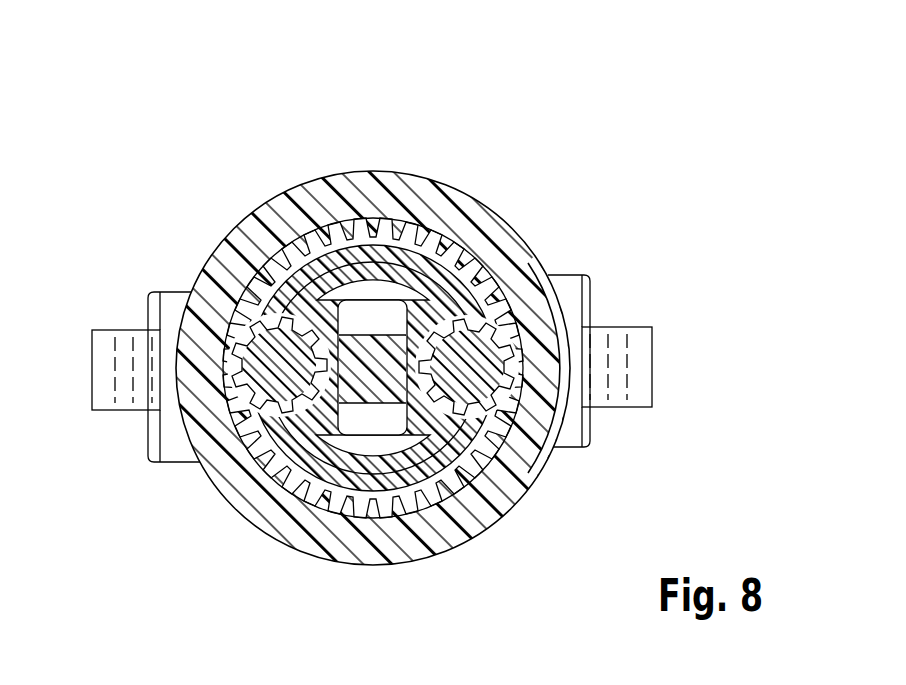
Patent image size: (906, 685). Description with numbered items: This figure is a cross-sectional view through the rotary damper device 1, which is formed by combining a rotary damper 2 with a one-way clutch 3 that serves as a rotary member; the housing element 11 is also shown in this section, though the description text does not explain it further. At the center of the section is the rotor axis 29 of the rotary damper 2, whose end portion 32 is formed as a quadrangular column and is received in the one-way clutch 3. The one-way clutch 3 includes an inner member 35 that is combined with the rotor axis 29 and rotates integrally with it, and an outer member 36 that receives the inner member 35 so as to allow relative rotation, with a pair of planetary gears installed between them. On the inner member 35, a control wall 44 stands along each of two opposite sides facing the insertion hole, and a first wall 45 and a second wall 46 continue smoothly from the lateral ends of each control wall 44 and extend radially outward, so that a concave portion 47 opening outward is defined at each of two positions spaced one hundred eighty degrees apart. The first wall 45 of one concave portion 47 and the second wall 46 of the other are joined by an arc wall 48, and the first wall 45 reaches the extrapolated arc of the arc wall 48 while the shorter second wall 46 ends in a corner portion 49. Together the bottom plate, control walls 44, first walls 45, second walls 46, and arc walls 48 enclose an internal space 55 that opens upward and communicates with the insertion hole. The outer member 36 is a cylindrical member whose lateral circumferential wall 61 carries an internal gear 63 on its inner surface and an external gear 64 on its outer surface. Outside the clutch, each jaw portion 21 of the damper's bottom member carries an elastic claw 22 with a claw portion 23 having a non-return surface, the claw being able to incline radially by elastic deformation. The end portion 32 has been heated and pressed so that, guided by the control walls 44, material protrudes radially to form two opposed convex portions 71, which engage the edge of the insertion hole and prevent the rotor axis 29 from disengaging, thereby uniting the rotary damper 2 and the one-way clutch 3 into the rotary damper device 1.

The rotary damper device 1 is at (546, 80).
The rotary damper 2 is at (578, 265).
The one-way clutch 3 is at (402, 197).
The housing 11 is at (506, 537).
The jaw portion 21 is at (567, 440).
The elastic claw 22 is at (622, 421).
The claw portion 23 is at (640, 392).
The rotor axis 29 is at (265, 352).
The end portion 32 is at (345, 242).
The inner member 35 is at (463, 230).
The outer member 36 is at (511, 265).
The control wall 44 is at (352, 428).
The first wall 45 is at (572, 318).
The second wall 46 is at (301, 205).
The concave portion 47 is at (227, 418).
The arc wall 48 is at (450, 223).
The corner portion 49 is at (196, 278).
The internal space 55 is at (283, 510).
The lateral circumferential wall 61 is at (273, 213).
The internal gear 63 is at (225, 272).
The external gear 64 is at (248, 236).
The convex portion 71 is at (380, 208).